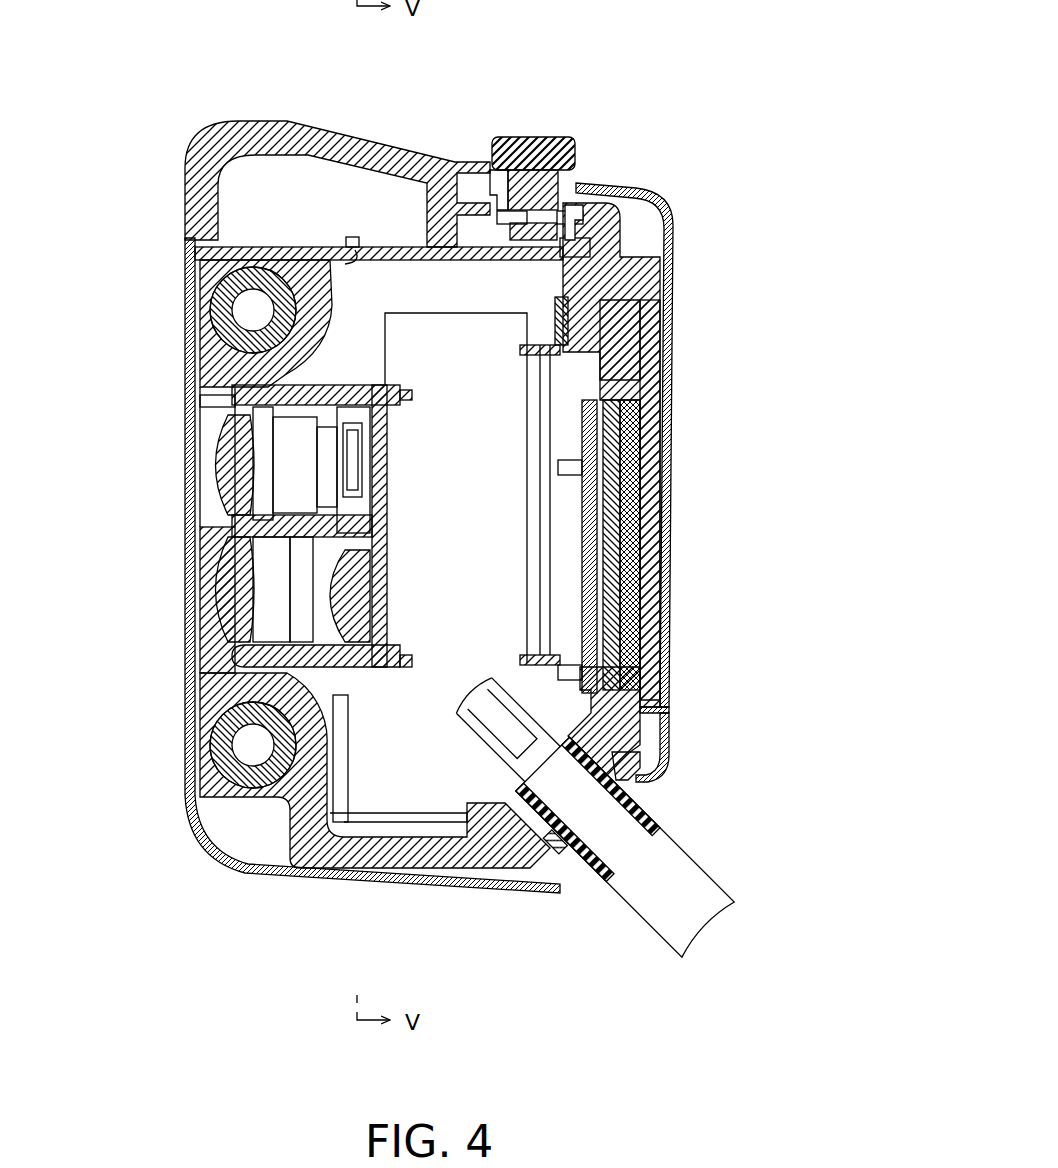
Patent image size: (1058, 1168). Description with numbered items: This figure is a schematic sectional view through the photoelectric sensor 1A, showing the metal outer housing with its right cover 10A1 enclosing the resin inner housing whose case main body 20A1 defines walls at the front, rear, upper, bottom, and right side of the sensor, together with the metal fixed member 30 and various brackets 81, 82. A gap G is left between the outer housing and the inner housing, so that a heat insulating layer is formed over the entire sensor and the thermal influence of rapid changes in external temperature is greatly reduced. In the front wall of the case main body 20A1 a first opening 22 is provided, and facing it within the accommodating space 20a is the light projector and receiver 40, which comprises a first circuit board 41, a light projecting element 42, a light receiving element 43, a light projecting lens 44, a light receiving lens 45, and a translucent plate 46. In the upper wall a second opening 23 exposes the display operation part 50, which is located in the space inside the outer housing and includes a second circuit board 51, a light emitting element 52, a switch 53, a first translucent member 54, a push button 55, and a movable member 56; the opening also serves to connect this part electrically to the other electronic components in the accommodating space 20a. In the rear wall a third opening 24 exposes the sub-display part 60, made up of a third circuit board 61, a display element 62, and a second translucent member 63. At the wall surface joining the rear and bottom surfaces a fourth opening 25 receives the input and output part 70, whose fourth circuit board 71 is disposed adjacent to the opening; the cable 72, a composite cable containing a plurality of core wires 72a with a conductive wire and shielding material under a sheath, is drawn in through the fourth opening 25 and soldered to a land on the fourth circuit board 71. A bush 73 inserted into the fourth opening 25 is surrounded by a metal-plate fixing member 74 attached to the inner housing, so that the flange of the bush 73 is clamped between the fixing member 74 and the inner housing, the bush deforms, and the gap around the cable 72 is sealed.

The photoelectric sensor 1A is at (698, 98).
The right cover 10A1 is at (640, 197).
The case main body 20A1 is at (522, 535).
The accommodating space 20a is at (578, 330).
The first opening 22 is at (215, 400).
The second opening 23 is at (355, 252).
The third opening 24 is at (620, 358).
The fourth opening 25 is at (575, 740).
The fixed member 30 is at (225, 312).
The light projector and receiver 40 is at (428, 509).
The first circuit board 41 is at (383, 512).
The light projecting element 42 is at (372, 590).
The light receiving element 43 is at (367, 460).
The light projecting lens 44 is at (235, 590).
The light receiving lens 45 is at (235, 470).
The translucent plate 46 is at (195, 527).
The display operation part 50 is at (325, 148).
The second circuit board 51 is at (393, 250).
The light emitting element 52 is at (354, 237).
The switch 53 is at (537, 237).
The first translucent member 54 is at (260, 135).
The push button 55 is at (532, 153).
The movable member 56 is at (532, 190).
The sub-display part 60 is at (675, 548).
The third circuit board 61 is at (590, 630).
The display element 62 is at (628, 593).
The second translucent member 63 is at (652, 550).
The input and output part 70 is at (559, 842).
The fourth circuit board 71 is at (497, 440).
The cable 72 is at (559, 842).
The core wires 72a is at (500, 745).
The bush 73 is at (585, 865).
The fixing member 74 is at (547, 847).
The bracket 81 is at (580, 353).
The bracket 82 is at (343, 648).
The gap G is at (635, 237).